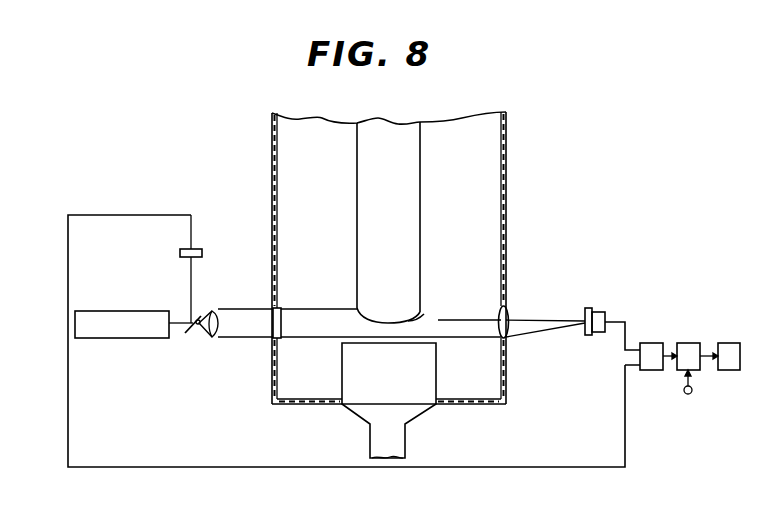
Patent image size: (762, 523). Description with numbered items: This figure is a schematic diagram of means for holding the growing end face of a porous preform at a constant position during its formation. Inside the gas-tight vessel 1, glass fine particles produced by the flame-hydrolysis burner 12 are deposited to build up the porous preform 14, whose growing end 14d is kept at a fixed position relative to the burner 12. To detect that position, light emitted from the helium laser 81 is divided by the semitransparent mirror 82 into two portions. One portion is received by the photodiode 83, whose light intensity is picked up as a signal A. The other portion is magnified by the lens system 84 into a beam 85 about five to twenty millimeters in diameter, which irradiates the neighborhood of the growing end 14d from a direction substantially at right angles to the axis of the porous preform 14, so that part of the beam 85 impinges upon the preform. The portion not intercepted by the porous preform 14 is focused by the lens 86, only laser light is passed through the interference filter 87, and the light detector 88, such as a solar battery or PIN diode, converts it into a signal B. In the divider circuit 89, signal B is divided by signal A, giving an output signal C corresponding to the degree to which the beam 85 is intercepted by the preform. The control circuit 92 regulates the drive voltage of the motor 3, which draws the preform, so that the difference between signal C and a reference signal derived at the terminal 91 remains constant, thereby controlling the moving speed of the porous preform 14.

The gas-tight vessel 1 is at (506, 192).
The porous preform 14 is at (412, 240).
The growing end 14d is at (424, 318).
The flame-hydrolysis burner 12 is at (405, 440).
The helium laser 81 is at (133, 311).
The semitransparent mirror 82 is at (190, 334).
The photodiode 83 is at (202, 253).
The lens system 84 is at (208, 342).
The beam 85 is at (241, 309).
The lens 86 is at (508, 310).
The interference filter 87 is at (588, 308).
The light detector 88 is at (605, 312).
The divider circuit 89 is at (651, 343).
The control circuit 92 is at (688, 343).
The motor 3 is at (729, 343).
The terminal 91 is at (692, 390).